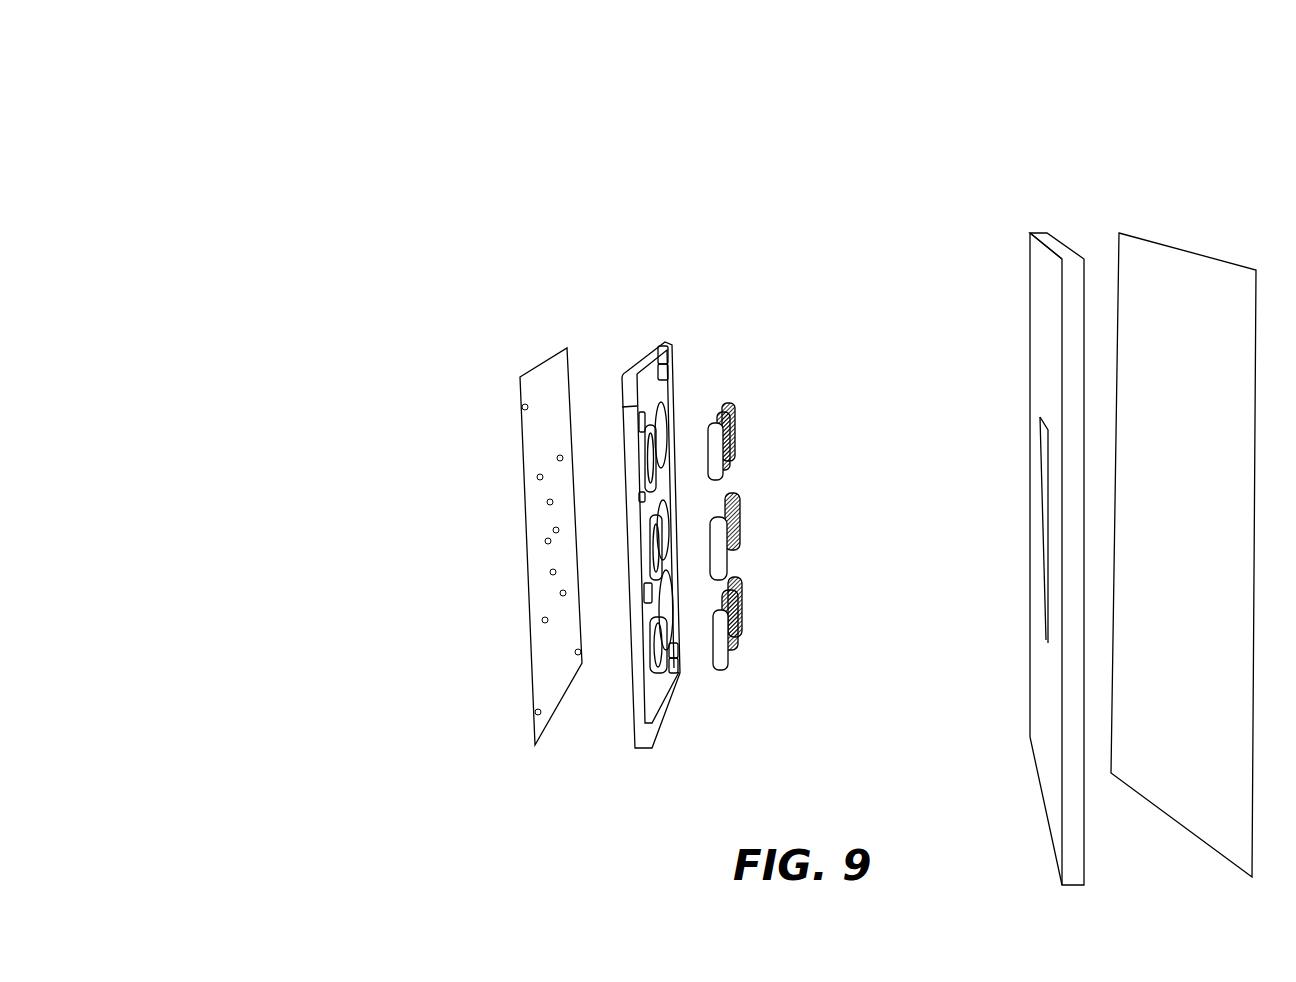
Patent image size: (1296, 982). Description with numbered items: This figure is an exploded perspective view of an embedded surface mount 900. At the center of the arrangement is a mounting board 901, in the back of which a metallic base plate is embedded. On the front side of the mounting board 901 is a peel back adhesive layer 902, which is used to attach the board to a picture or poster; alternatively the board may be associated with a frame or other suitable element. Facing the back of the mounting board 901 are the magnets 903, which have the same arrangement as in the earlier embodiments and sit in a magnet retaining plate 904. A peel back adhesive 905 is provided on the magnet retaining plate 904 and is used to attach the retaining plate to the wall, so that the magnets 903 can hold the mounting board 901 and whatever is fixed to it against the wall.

The embedded surface mount 900 is at (353, 187).
The mounting board 901 is at (1034, 263).
The peel back adhesive layer 902 is at (1168, 250).
The magnets 903 is at (731, 396).
The magnet retaining plate 904 is at (658, 344).
The peel back adhesive 905 is at (540, 373).